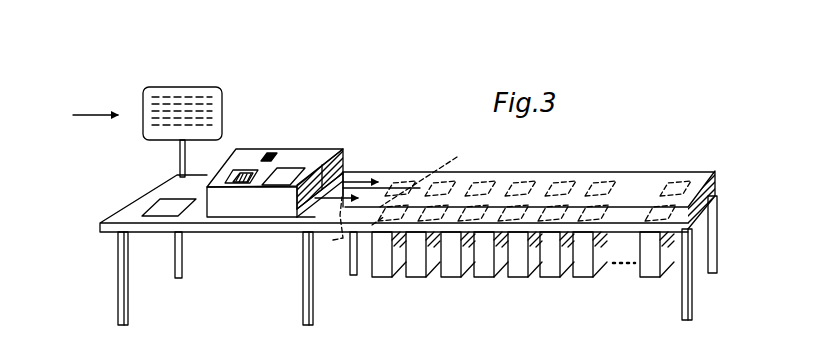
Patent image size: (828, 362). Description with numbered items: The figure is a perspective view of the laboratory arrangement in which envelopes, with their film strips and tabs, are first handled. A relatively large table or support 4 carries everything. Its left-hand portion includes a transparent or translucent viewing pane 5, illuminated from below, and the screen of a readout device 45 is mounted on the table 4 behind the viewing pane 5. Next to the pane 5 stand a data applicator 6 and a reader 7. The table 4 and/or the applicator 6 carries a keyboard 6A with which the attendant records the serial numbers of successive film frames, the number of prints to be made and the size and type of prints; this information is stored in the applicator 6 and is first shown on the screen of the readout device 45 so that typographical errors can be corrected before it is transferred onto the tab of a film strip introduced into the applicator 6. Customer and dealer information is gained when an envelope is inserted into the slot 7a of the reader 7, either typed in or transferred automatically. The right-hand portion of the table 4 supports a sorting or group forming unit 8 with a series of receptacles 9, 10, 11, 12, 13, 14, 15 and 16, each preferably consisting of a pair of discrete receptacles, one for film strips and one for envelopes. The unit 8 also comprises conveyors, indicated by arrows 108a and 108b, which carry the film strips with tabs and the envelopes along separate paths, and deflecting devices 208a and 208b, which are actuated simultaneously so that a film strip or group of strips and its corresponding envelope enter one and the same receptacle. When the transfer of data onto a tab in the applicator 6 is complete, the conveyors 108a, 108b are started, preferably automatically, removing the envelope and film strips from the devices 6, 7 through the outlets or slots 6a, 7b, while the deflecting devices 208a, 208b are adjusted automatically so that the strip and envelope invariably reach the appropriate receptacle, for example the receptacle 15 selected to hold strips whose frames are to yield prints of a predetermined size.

The table 4 is at (100, 230).
The viewing pane 5 is at (153, 212).
The data applicator 6 is at (235, 167).
The keyboard 6A is at (277, 182).
The outlet slot of data applicator 6a is at (323, 213).
The reader 7 is at (307, 158).
The slot of reader 7a is at (272, 156).
The outlet slot of reader 7b is at (335, 171).
The sorting or group forming unit 8 is at (588, 178).
The receptacle 9 is at (382, 273).
The receptacle 10 is at (415, 272).
The receptacle 11 is at (452, 272).
The receptacle 12 is at (483, 272).
The receptacle 13 is at (517, 272).
The receptacle 14 is at (552, 273).
The receptacle 15 is at (583, 273).
The receptacle 16 is at (650, 273).
The readout device 45 is at (185, 92).
The conveyor for film strips 108a is at (340, 240).
The conveyor for envelopes 108b is at (413, 177).
The deflecting device for film strips 208a is at (378, 225).
The deflecting device for envelopes 208b is at (527, 184).